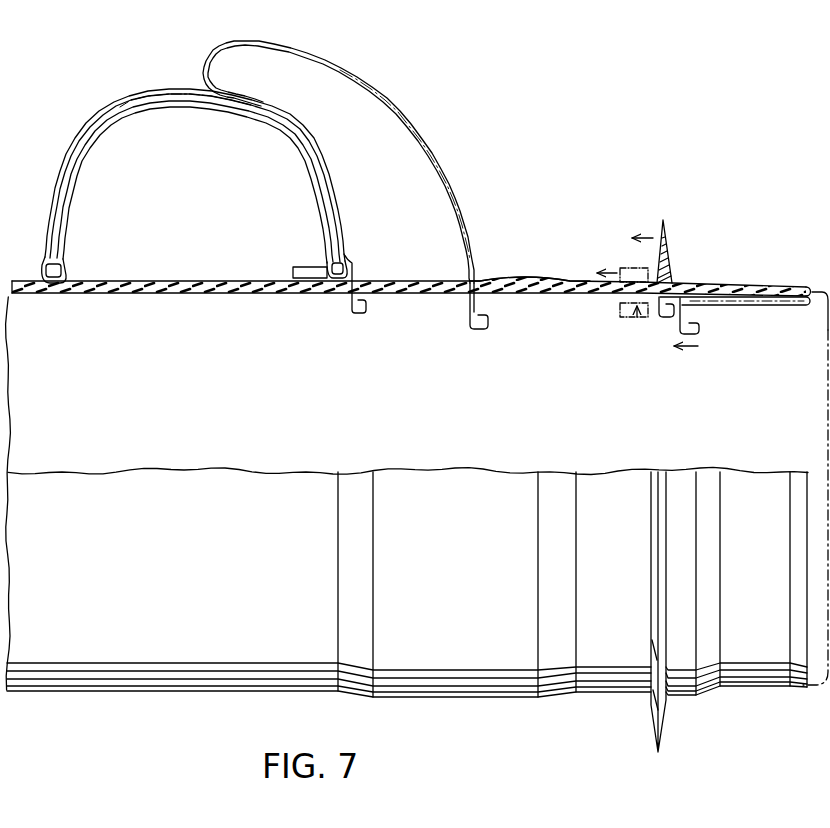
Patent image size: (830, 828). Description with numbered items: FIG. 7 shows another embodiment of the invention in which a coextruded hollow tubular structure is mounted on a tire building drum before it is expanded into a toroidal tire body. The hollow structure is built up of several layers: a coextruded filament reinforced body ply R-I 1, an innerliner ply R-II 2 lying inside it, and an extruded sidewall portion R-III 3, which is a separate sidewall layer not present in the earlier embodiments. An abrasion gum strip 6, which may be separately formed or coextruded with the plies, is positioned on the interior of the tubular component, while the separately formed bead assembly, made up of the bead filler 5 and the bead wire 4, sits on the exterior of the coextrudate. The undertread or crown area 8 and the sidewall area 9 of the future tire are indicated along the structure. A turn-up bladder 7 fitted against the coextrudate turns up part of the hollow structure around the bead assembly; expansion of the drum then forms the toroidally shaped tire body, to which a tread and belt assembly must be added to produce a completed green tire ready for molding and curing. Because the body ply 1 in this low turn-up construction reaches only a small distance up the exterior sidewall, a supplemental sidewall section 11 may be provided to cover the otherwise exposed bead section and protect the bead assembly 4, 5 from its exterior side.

The filament reinforced body ply R-I 1 is at (78, 186).
The innerliner ply R-II 2 is at (155, 118).
The sidewall portion R-III 3 is at (103, 117).
The bead wire 4 is at (674, 277).
The bead filler 5 is at (668, 247).
The abrasion gum strip 6 is at (652, 297).
The turnup bladder 7 is at (416, 120).
The undertread (crown) 8 is at (173, 93).
The sidewall area 9 is at (62, 172).
The supplemental sidewall section 11 is at (755, 290).